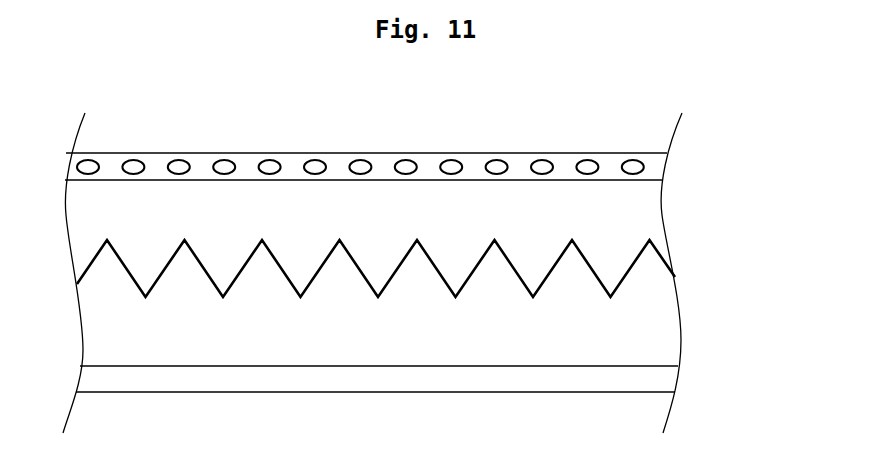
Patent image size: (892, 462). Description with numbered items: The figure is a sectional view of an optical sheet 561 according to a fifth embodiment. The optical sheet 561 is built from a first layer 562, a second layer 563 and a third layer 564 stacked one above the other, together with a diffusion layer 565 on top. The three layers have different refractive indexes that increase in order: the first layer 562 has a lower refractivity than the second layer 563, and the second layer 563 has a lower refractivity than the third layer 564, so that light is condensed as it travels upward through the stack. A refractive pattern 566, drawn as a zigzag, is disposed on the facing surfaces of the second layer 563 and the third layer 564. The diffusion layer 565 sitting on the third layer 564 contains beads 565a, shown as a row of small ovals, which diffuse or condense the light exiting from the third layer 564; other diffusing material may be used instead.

The optical sheet 561 is at (762, 162).
The first layer 562 is at (666, 381).
The second layer 563 is at (666, 338).
The third layer 564 is at (655, 206).
The diffusion layer 565 is at (404, 140).
The bead 565a is at (496, 160).
The refractive pattern 566 is at (435, 268).